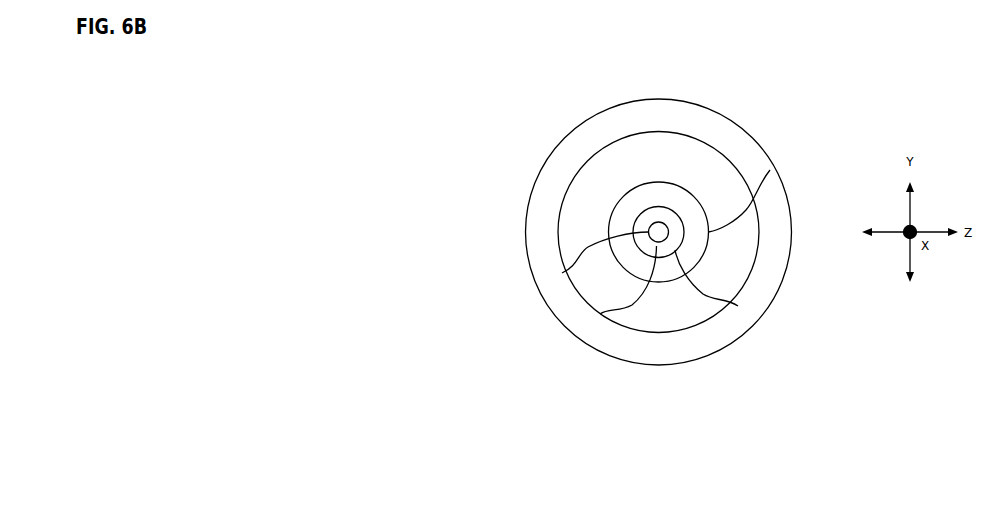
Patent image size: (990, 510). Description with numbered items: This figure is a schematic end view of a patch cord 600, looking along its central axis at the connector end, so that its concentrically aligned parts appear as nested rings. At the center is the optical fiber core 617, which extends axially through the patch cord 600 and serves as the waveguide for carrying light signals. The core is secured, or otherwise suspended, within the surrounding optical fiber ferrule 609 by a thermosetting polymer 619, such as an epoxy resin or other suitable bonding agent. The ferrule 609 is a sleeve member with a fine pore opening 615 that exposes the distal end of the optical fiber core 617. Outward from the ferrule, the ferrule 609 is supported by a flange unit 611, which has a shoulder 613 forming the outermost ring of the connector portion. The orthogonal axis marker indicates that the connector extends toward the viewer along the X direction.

The patch cord 600 is at (426, 143).
The optical fiber ferrule 609 is at (770, 170).
The flange unit 611 is at (660, 131).
The shoulder 613 is at (752, 137).
The fine pore opening 615 is at (738, 306).
The optical fiber core 617 is at (562, 273).
The thermosetting polymer 619 is at (600, 314).